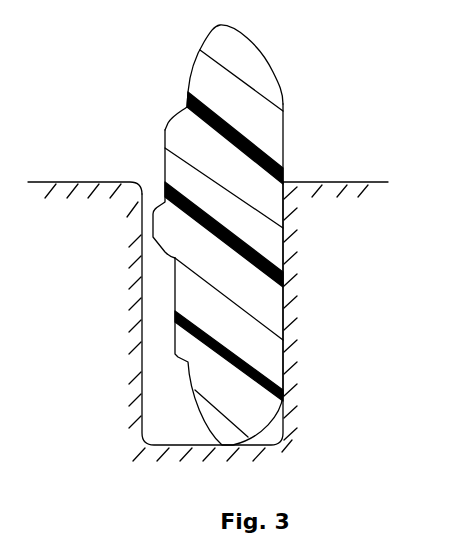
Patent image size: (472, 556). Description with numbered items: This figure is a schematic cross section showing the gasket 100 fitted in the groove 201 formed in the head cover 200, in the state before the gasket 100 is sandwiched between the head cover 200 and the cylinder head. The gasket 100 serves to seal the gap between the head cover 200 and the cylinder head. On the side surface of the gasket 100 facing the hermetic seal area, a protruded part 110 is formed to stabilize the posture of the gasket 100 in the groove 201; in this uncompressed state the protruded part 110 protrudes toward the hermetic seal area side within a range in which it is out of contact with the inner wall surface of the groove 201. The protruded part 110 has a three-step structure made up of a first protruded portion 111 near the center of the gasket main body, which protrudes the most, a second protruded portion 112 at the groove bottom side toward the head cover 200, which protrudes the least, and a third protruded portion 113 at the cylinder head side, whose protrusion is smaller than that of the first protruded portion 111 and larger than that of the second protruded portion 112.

The gasket 100 is at (210, 229).
The protruded part 110 is at (163, 235).
The first protruded portion 111 is at (153, 227).
The second protruded portion 112 is at (173, 297).
The third protruded portion 113 is at (163, 157).
The head cover 200 is at (209, 290).
The groove 201 is at (136, 348).